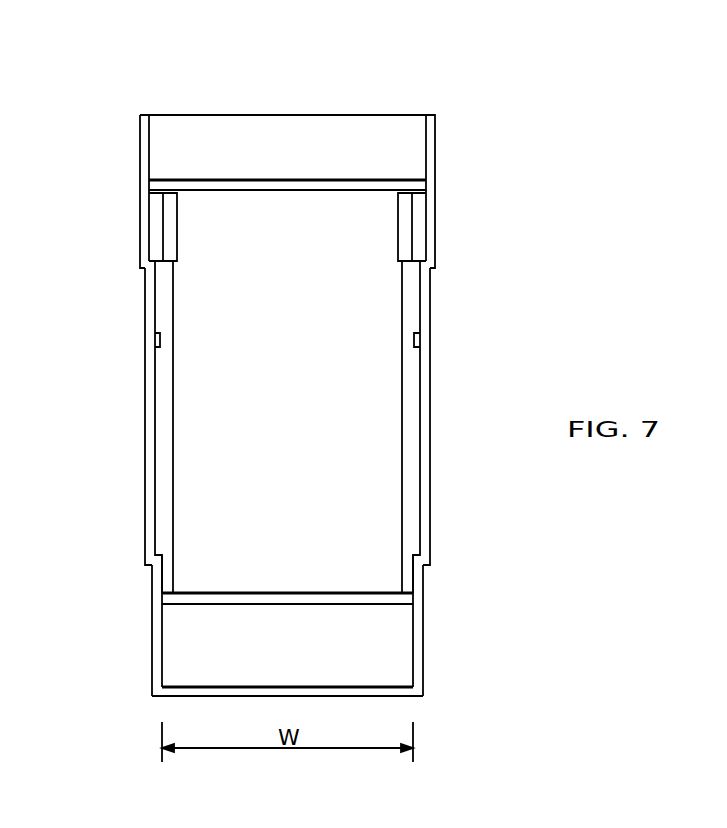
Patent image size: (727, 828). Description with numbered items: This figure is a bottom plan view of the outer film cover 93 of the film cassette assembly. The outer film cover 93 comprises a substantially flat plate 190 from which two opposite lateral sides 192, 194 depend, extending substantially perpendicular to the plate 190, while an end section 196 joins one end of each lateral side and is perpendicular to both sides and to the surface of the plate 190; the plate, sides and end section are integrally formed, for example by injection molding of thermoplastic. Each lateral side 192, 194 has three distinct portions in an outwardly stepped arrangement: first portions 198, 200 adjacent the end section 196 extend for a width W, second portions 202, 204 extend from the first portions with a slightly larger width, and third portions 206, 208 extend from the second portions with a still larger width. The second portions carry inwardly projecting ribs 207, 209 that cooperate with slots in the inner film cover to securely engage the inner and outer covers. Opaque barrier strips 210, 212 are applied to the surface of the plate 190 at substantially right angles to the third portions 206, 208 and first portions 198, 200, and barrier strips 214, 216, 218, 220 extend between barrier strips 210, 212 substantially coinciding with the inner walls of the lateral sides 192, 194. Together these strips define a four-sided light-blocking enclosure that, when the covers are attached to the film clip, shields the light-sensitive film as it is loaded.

The outer film cover 93 is at (455, 78).
The flat plate 190 is at (304, 397).
The lateral side 192 is at (432, 472).
The lateral side 194 is at (144, 493).
The end section 196 is at (385, 698).
The first portion 198 is at (422, 638).
The first portion 200 is at (162, 645).
The second portion 202 is at (420, 398).
The second portion 204 is at (145, 421).
The third portion 206 is at (435, 142).
The inwardly projecting rib 207 is at (430, 338).
The third portion 208 is at (140, 143).
The inwardly projecting rib 209 is at (145, 337).
The barrier strip 210 is at (273, 598).
The barrier strip 212 is at (220, 193).
The barrier strip 214 is at (408, 488).
The barrier strip 216 is at (407, 243).
The barrier strip 218 is at (167, 367).
The barrier strip 220 is at (173, 240).